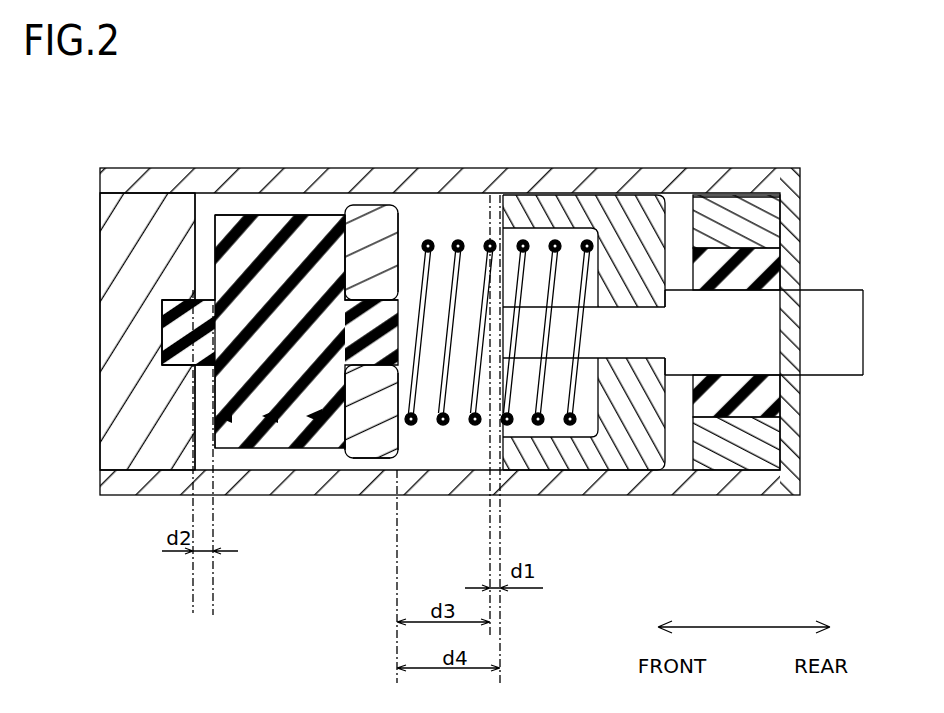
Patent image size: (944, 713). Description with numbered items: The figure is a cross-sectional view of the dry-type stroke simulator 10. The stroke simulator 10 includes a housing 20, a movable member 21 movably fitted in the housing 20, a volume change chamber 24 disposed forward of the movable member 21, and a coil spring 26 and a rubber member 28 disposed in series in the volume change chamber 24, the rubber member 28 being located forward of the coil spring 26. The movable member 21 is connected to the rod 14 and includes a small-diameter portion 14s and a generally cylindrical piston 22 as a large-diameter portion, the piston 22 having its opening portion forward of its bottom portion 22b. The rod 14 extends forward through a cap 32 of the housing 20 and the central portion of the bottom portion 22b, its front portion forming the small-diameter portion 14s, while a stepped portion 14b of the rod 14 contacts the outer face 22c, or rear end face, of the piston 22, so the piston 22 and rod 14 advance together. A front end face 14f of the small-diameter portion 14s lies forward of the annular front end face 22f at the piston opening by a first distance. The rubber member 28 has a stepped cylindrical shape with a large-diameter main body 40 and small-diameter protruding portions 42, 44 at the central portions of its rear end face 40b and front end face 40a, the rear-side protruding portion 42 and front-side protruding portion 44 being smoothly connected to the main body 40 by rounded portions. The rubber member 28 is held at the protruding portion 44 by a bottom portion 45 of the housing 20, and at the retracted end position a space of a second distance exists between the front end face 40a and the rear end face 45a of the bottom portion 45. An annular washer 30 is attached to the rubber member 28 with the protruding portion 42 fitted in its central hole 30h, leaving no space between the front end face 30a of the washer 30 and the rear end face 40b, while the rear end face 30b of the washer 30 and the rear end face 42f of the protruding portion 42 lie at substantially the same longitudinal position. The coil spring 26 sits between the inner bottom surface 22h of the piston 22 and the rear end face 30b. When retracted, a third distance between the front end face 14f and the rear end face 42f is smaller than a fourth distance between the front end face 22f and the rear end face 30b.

The stroke simulator 10 is at (855, 133).
The rod 14 is at (634, 410).
The stepped portion 14b is at (642, 360).
The front end face 14f is at (497, 345).
The small-diameter portion 14s is at (622, 343).
The housing 20 is at (516, 160).
The movable member 21 is at (579, 320).
The piston 22 is at (579, 340).
The bottom portion 22b is at (640, 215).
The outer face 22c is at (666, 225).
The annular front end face 22f is at (502, 447).
The inner bottom surface 22h is at (595, 405).
The volume change chamber 24 is at (258, 200).
The coil spring 26 is at (480, 230).
The rubber member 28 is at (234, 205).
The washer 30 is at (372, 346).
The front end face 30a is at (300, 455).
The rear end face 30b is at (405, 232).
The central hole 30h is at (385, 458).
The cap 32 is at (753, 185).
The main body 40 is at (258, 346).
The front end face 40a is at (200, 415).
The rear end face 40b is at (358, 218).
The protruding portion 42 is at (447, 322).
The rear end face 42f is at (435, 275).
The protruding portion 44 is at (157, 346).
The bottom portion 45 is at (142, 369).
The rear end face 45a is at (225, 413).